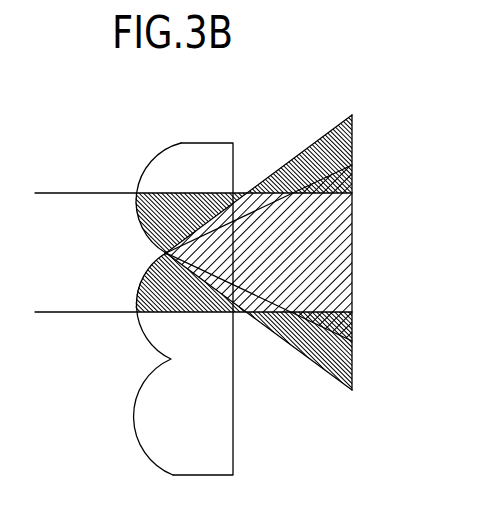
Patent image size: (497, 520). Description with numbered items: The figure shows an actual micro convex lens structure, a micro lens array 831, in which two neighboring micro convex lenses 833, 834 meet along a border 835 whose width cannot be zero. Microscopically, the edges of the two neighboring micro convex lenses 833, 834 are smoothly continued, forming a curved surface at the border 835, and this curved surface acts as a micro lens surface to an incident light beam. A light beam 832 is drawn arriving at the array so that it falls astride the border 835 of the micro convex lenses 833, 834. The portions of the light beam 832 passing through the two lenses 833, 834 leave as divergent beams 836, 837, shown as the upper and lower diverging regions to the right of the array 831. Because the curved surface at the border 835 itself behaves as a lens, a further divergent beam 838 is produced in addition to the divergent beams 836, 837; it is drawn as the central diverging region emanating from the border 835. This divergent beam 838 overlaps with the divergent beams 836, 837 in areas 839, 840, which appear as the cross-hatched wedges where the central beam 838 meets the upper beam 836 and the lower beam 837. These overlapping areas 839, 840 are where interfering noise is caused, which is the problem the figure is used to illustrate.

The micro lens array 831 is at (207, 143).
The light beam 832 is at (73, 193).
The micro convex lens 833 is at (152, 160).
The micro convex lens 834 is at (142, 333).
The border 835 is at (163, 254).
The divergent beam 836 is at (318, 157).
The divergent beam 837 is at (305, 355).
The divergent beam 838 is at (318, 248).
The area 839 is at (348, 185).
The area 840 is at (345, 327).